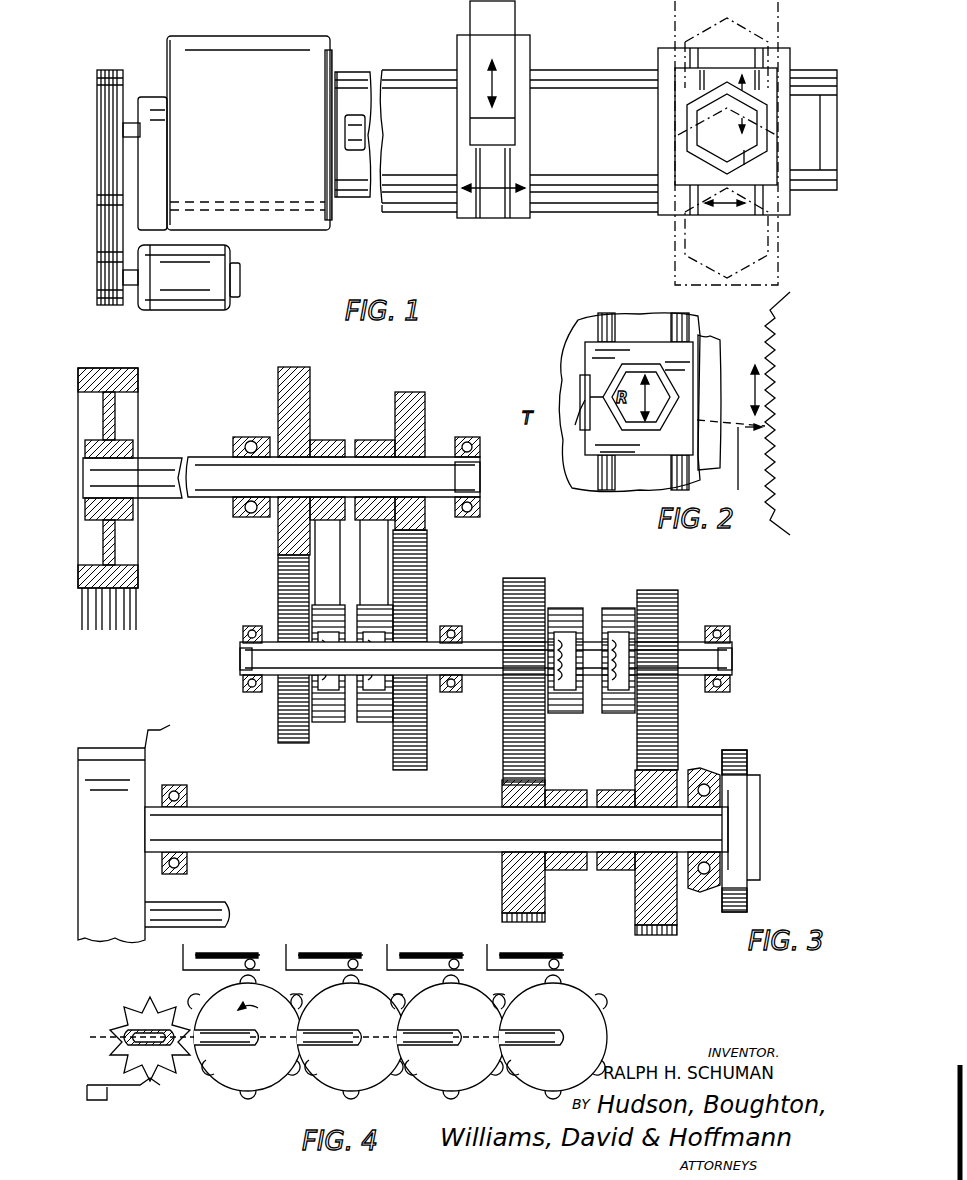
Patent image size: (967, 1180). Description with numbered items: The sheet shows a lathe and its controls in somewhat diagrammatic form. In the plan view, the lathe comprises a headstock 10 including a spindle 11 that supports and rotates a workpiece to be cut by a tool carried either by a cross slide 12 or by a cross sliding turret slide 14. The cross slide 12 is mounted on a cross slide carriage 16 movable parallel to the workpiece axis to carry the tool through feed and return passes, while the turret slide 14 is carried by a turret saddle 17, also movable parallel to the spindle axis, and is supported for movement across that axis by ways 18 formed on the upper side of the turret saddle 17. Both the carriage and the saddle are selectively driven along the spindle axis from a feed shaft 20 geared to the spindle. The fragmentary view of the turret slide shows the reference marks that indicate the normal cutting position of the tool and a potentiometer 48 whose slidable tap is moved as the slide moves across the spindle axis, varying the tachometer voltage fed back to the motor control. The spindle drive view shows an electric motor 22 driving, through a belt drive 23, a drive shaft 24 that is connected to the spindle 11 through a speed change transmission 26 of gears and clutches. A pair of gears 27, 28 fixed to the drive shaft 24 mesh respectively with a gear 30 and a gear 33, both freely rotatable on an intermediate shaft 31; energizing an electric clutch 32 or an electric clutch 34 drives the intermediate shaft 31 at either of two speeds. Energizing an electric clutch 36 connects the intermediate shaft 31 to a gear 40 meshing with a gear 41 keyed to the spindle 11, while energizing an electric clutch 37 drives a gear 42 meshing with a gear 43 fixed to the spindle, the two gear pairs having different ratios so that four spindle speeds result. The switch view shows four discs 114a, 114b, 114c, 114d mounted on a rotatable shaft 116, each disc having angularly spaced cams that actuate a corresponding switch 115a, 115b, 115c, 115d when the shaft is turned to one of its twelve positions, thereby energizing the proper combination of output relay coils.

In FIG. 1, the headstock 10 is at (290, 218).
In FIG. 3, the spindle 11 is at (262, 820).
In FIG. 1, the cross slide 12 is at (512, 105).
In FIG. 1, the cross sliding turret slide 14 is at (696, 143).
In FIG. 1, the cross slide carriage 16 is at (498, 127).
In FIG. 1, the turret saddle 17 is at (668, 68).
In FIG. 1, the ways 18 is at (690, 172).
In FIG. 1, the feed shaft 20 is at (568, 214).
In FIG. 3, the feed shaft 20 is at (206, 906).
In FIG. 1, the electric motor 22 is at (205, 298).
In FIG. 1, the belt drive 23 is at (96, 211).
In FIG. 1, the drive shaft 24 is at (131, 123).
In FIG. 3, the drive shaft 24 is at (438, 462).
In FIG. 3, the speed change transmission 26 is at (469, 608).
In FIG. 3, the gear 27 is at (300, 422).
In FIG. 3, the gear 28 is at (418, 418).
In FIG. 3, the gear 30 is at (278, 614).
In FIG. 3, the intermediate shaft 31 is at (486, 678).
In FIG. 3, the electric clutch 32 is at (329, 618).
In FIG. 3, the gear 33 is at (427, 592).
In FIG. 3, the electric clutch 34 is at (373, 722).
In FIG. 3, the electric clutch 36 is at (568, 612).
In FIG. 3, the electric clutch 37 is at (618, 612).
In FIG. 3, the gear 40 is at (538, 572).
In FIG. 3, the gear 41 is at (504, 894).
In FIG. 3, the gear 42 is at (670, 592).
In FIG. 3, the gear 43 is at (645, 906).
In FIG. 2, the potentiometer 48 is at (780, 396).
In FIG. 4, the disc 114a is at (246, 1092).
In FIG. 4, the disc 114b is at (364, 1092).
In FIG. 4, the disc 114c is at (462, 1092).
In FIG. 4, the disc 114d is at (555, 1092).
In FIG. 4, the switch 115a is at (200, 958).
In FIG. 4, the switch 115b is at (303, 958).
In FIG. 4, the switch 115c is at (405, 958).
In FIG. 4, the switch 115d is at (507, 958).
In FIG. 4, the rotatable shaft 116 is at (118, 1034).